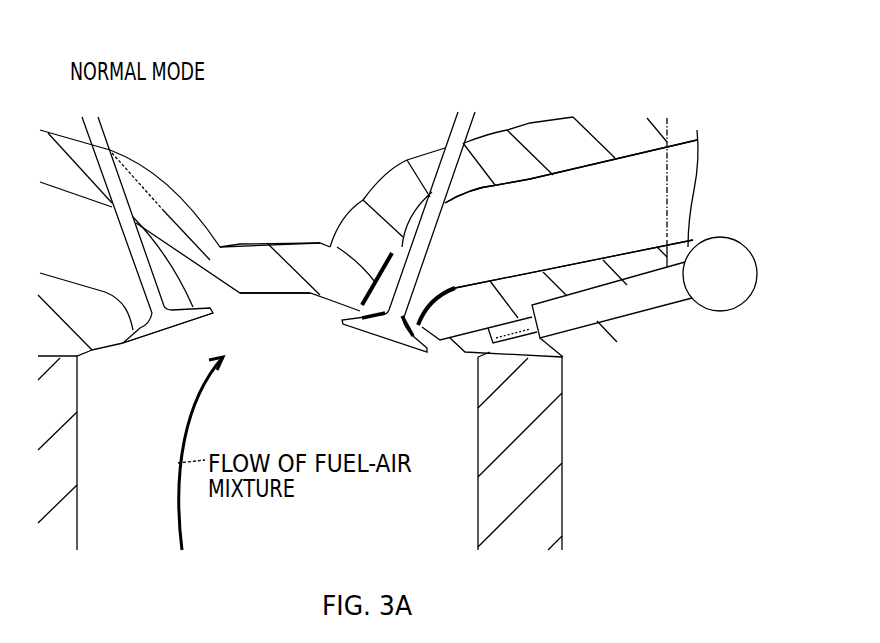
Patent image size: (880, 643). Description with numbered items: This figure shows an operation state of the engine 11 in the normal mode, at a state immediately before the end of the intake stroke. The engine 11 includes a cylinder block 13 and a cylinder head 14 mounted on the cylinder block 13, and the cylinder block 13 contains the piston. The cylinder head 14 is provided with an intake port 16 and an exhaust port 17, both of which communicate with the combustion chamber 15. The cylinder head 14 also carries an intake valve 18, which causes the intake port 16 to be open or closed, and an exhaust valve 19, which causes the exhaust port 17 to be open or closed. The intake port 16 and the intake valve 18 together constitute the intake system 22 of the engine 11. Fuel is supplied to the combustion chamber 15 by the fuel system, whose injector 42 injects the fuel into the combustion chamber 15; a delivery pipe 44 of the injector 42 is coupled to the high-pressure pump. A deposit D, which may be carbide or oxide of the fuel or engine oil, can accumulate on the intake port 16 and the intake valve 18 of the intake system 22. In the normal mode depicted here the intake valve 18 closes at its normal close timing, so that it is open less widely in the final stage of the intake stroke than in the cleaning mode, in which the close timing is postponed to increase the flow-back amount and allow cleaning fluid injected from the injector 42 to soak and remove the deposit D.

The engine 11 is at (600, 89).
The cylinder block 13 is at (552, 491).
The cylinder head 14 is at (632, 125).
The combustion chamber 15 is at (275, 310).
The intake port 16 is at (493, 217).
The exhaust port 17 is at (160, 260).
The intake valve 18 is at (387, 333).
The exhaust valve 19 is at (152, 337).
The intake system 22 is at (518, 237).
The injector 42 is at (630, 292).
The delivery pipe 44 is at (720, 302).
The deposit D is at (388, 270).